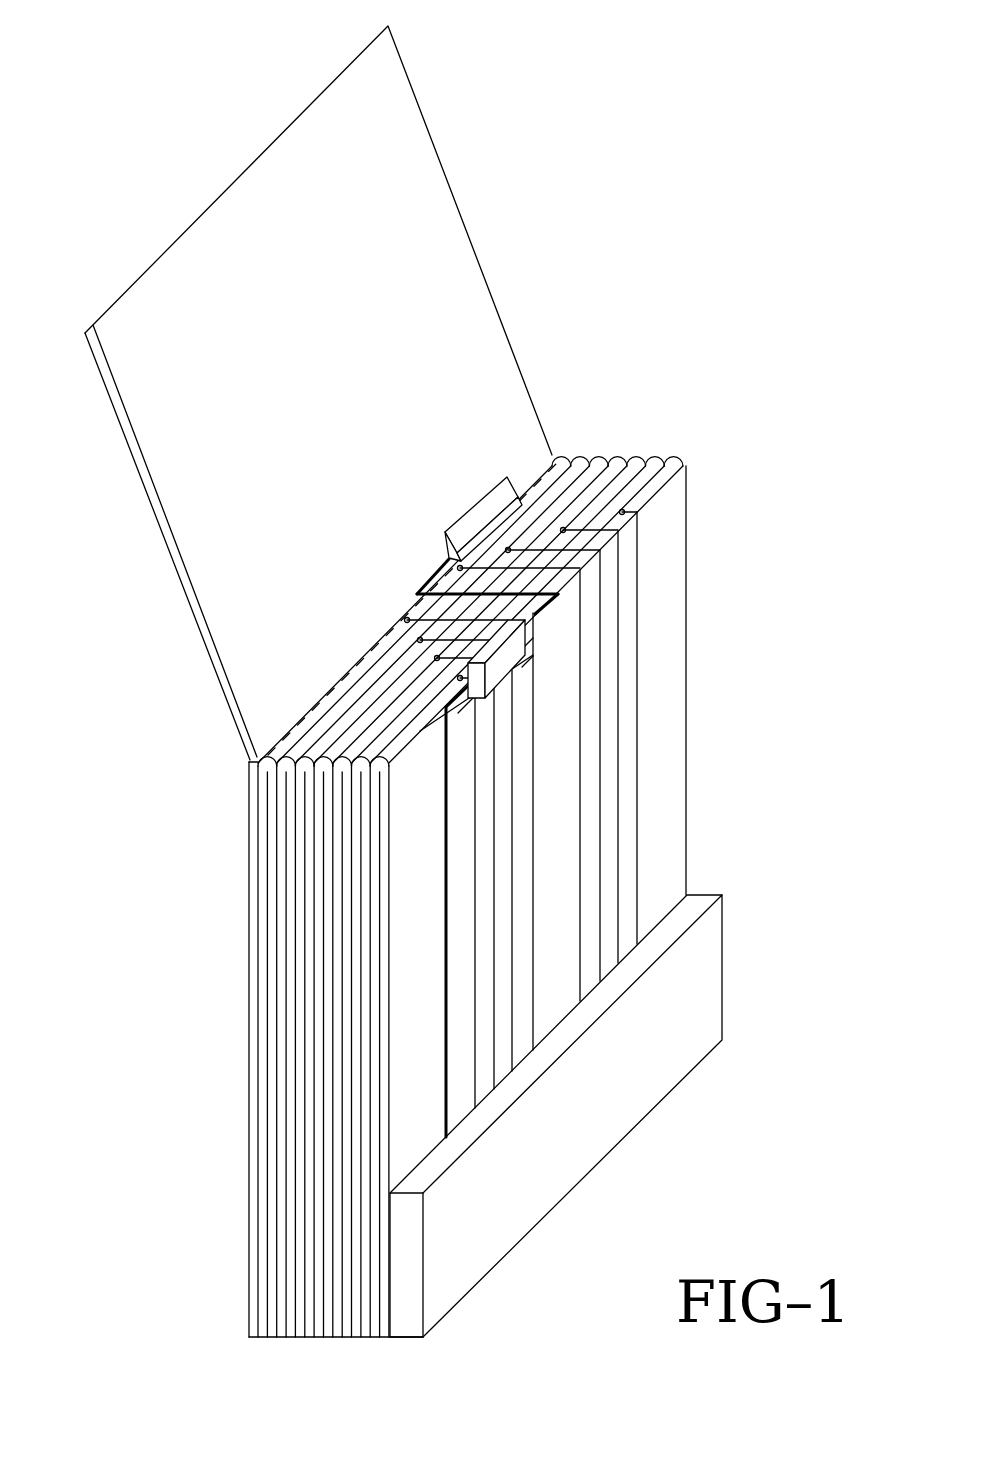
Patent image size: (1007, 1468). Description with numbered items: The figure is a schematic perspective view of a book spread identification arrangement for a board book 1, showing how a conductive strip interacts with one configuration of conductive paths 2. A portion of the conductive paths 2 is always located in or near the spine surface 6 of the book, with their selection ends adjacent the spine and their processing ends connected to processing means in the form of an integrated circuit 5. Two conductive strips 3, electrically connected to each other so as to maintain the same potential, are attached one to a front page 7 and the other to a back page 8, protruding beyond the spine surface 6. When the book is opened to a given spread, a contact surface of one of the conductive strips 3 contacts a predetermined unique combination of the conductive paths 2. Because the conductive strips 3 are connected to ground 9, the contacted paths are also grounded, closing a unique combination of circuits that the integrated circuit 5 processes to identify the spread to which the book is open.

The board book 1 is at (236, 1102).
The conductive paths 2 is at (583, 760).
The conductive strips 3 is at (483, 490).
The integrated circuit 5 is at (678, 1057).
The spine surface 6 is at (338, 724).
The front page 7 is at (668, 641).
The back page 8 is at (443, 245).
The ground 9 is at (450, 1077).